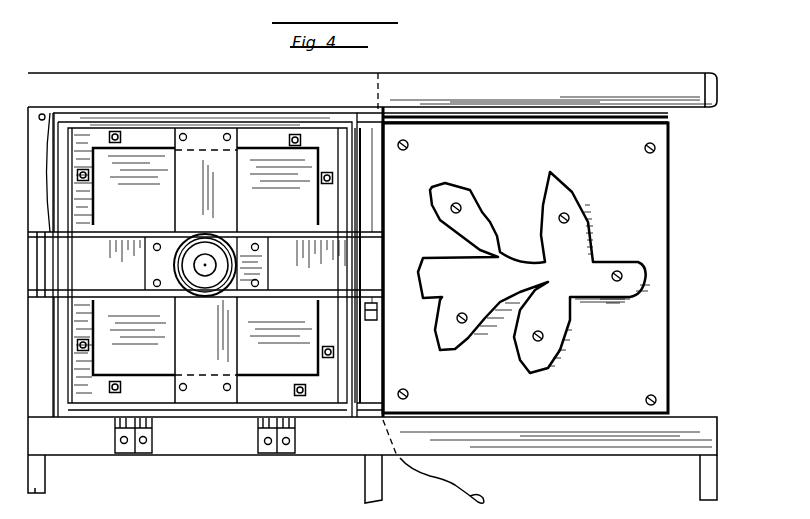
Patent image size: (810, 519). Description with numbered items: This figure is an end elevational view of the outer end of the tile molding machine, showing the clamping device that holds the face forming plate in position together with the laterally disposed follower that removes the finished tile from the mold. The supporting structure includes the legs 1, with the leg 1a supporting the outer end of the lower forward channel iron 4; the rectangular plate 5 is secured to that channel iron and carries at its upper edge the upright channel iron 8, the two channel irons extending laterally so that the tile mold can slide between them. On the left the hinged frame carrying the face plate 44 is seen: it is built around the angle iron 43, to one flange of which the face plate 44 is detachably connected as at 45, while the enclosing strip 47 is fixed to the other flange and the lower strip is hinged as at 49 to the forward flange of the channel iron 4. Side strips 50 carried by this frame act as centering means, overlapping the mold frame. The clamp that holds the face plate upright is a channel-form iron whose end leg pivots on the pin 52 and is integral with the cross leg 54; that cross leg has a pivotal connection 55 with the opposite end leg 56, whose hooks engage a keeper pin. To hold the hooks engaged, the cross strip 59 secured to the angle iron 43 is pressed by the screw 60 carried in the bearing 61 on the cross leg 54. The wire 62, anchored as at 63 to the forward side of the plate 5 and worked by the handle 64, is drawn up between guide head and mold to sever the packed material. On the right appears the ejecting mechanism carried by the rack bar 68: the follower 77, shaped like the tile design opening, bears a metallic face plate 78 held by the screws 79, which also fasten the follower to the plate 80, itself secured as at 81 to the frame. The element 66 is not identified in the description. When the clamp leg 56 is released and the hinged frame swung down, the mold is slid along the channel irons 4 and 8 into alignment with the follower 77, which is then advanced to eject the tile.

The legs 1 is at (366, 485).
The leg 1a is at (47, 487).
The forward channel iron 4 is at (218, 448).
The plate 5 is at (372, 378).
The upright channel iron 8 is at (518, 79).
The angle iron 43 is at (177, 152).
The face plate 44 is at (250, 155).
The fastening 45 is at (115, 143).
The enclosing strip 47 is at (320, 116).
The hinge 49 is at (141, 453).
The side strips 50 is at (48, 147).
The pin 52 is at (33, 252).
The cross leg 54 is at (293, 237).
The pivotal connection 55 is at (377, 270).
The end leg 56 is at (385, 228).
The cross strip 59 is at (206, 265).
The screw 60 is at (216, 243).
The bearing 61 is at (163, 242).
The wire 62 is at (45, 172).
The anchor 63 is at (48, 113).
The handle 64 is at (482, 500).
The rail end 66 is at (697, 130).
The rack bar 68 is at (690, 421).
The follower 77 is at (541, 195).
The metallic face plate 78 is at (598, 293).
The screws 79 is at (460, 203).
The plate 80 is at (670, 230).
The fastening 81 is at (409, 147).